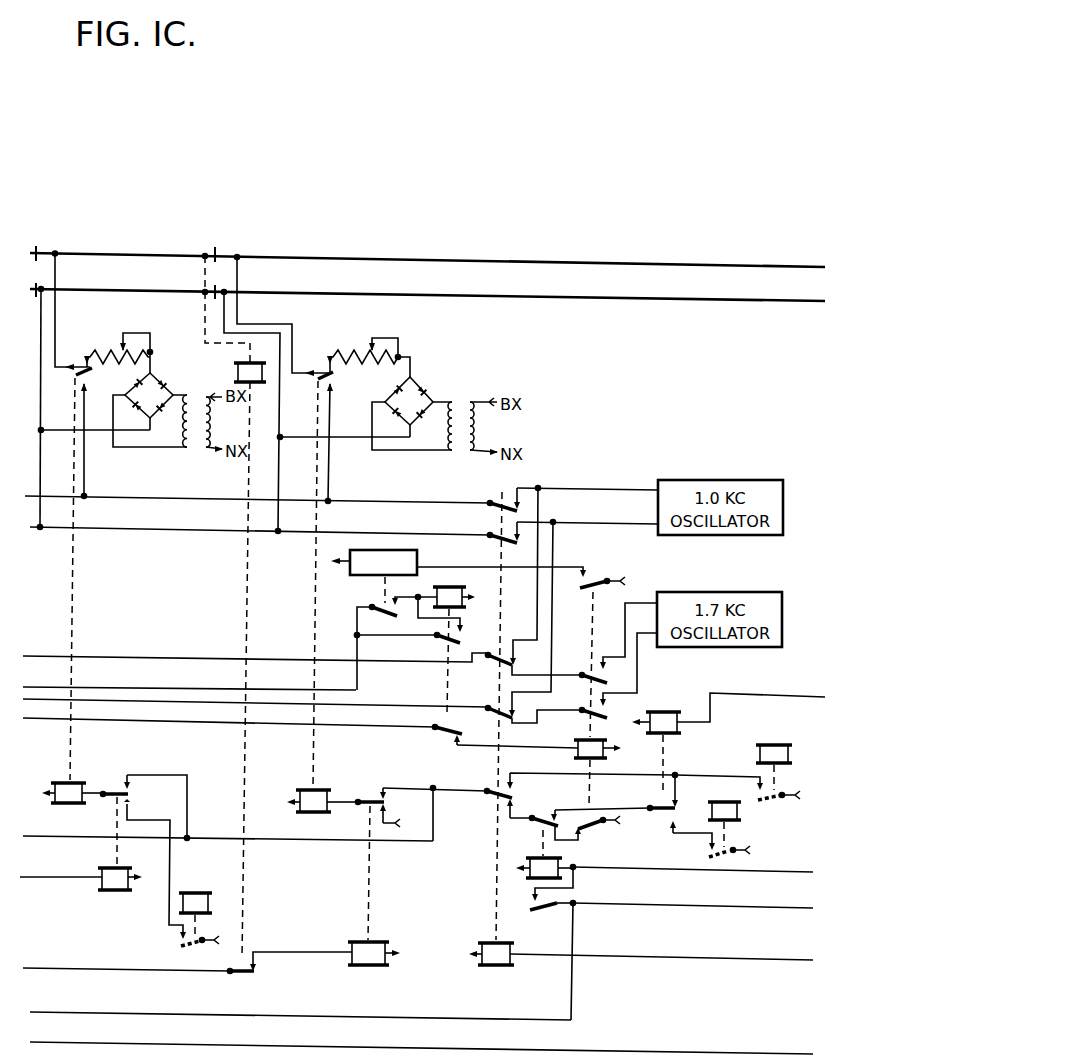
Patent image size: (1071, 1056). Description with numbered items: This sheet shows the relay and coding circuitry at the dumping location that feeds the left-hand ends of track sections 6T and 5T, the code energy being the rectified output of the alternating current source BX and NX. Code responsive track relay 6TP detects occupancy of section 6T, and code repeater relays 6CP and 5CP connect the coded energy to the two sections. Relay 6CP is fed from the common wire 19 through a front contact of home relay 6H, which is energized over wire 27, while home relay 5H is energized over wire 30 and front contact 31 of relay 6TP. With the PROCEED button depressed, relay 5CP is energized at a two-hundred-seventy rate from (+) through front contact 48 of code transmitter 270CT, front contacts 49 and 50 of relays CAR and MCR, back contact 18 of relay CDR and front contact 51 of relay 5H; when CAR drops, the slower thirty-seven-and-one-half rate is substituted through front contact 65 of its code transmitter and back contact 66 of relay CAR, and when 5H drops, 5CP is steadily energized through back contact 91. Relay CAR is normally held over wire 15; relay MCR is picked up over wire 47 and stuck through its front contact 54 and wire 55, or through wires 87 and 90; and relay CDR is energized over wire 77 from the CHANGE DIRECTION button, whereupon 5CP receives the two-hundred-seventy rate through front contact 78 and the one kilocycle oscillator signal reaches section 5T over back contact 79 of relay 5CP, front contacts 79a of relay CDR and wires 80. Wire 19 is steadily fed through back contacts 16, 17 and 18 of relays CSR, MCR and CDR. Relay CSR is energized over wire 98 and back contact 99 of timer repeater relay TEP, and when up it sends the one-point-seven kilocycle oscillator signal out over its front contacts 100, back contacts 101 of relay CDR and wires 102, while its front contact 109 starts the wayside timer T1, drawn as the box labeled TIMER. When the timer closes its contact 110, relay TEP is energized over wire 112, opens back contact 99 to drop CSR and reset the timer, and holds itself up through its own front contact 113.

The track section 6T is at (163, 284).
The track section 5T is at (590, 297).
The code responsive track relay 6TP is at (237, 370).
The back contact of code repeater relay 5CP 79 is at (332, 390).
The front contacts of relay CDR 79a is at (512, 524).
The wires 80 is at (110, 498).
The front contact of relay CSR 109 is at (588, 572).
The front contacts of relay CSR 100 is at (606, 692).
The back contacts of relay CDR 101 is at (486, 706).
The wires 102 is at (28, 657).
The wire 112 is at (97, 686).
The wire 98 is at (48, 721).
The back contact of timer repeater relay TEP 99 is at (455, 741).
The wire 15 is at (752, 693).
The contact of timer T1 110 is at (393, 612).
The front contact of relay TEP 113 is at (463, 629).
The wayside timer T1 is at (418, 559).
The wayside timer TIMER is at (369, 573).
The timer repeater relay TEP is at (462, 639).
The relay CSR is at (604, 740).
The relay CAR is at (649, 739).
The relay MCR is at (550, 862).
The relay CDR is at (480, 942).
The code repeater relay 6CP is at (107, 850).
The code repeater relay 5CP is at (314, 851).
The front contact of home relay 5H 51 is at (381, 795).
The back contact of relay 5H 91 is at (403, 812).
The front contact of relay CDR 78 is at (503, 777).
The front contact of relay MCR 50 is at (551, 813).
The front contact of relay CAR 49 is at (666, 806).
The front contact of code transmitter 270CT 48 is at (760, 782).
The back contact of relay CDR 18 is at (502, 811).
The back contact of relay MCR 17 is at (546, 832).
The back contact of relay CSR 16 is at (584, 836).
The back contact of relay CAR 66 is at (691, 830).
The front contact of code transmitter 37½ CT 65 is at (708, 845).
The wire 19 is at (28, 833).
The home relay 6H is at (128, 867).
The home relay 5H is at (333, 939).
The code transmitter 270CT is at (777, 743).
The wire 27 is at (70, 878).
The wire 47 is at (753, 873).
The wire 55 is at (748, 910).
The front contact of relay MCR 54 is at (531, 901).
The wire 30 is at (70, 968).
The front contact of relay 6TP 31 is at (258, 964).
The wire 87 is at (88, 1012).
The wire 90 is at (40, 1042).
The wire 77 is at (743, 962).